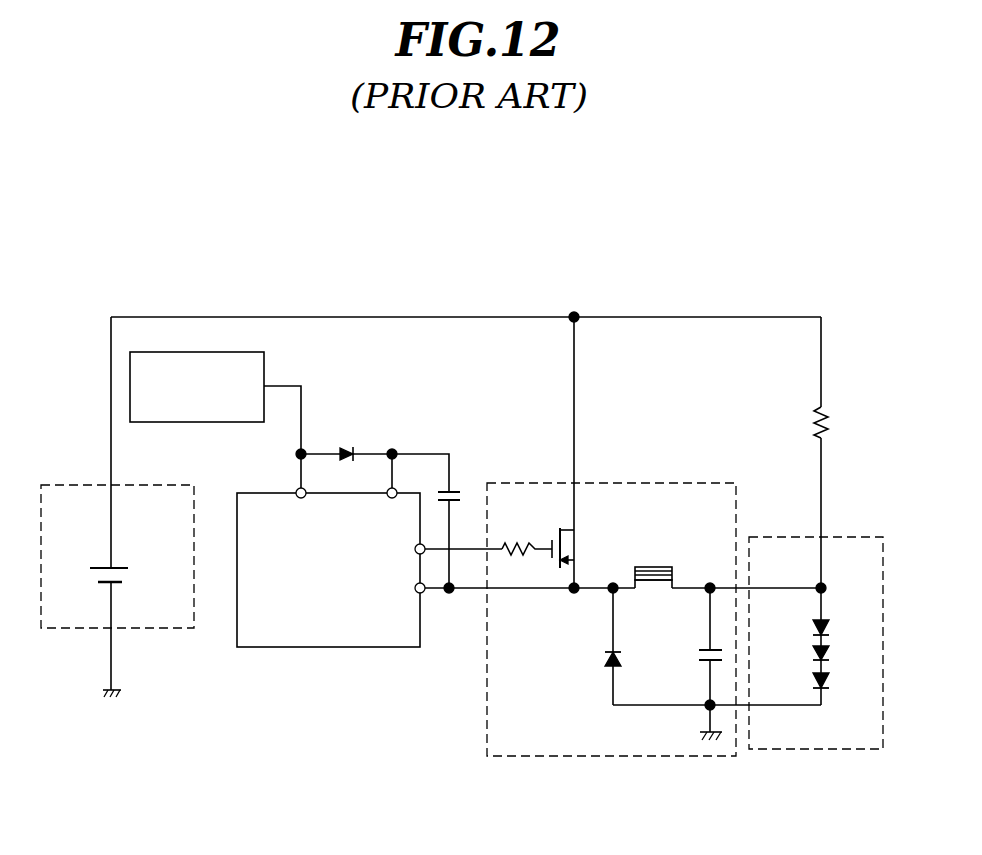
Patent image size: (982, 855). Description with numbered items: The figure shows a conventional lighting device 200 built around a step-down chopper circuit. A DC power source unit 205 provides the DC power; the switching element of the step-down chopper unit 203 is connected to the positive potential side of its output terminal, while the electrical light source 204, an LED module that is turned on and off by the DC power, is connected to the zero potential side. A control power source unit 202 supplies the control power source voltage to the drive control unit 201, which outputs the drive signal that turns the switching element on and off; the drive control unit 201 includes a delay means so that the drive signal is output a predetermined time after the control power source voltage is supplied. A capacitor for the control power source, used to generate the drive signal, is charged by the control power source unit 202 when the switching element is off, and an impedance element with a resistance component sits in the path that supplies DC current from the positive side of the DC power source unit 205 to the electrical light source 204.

The lighting device 200 is at (220, 729).
The drive control unit 201 is at (328, 649).
The control power source unit 202 is at (265, 364).
The step-down chopper unit 203 is at (679, 483).
The electrical light source 204 is at (853, 536).
The DC power source unit 205 is at (182, 484).